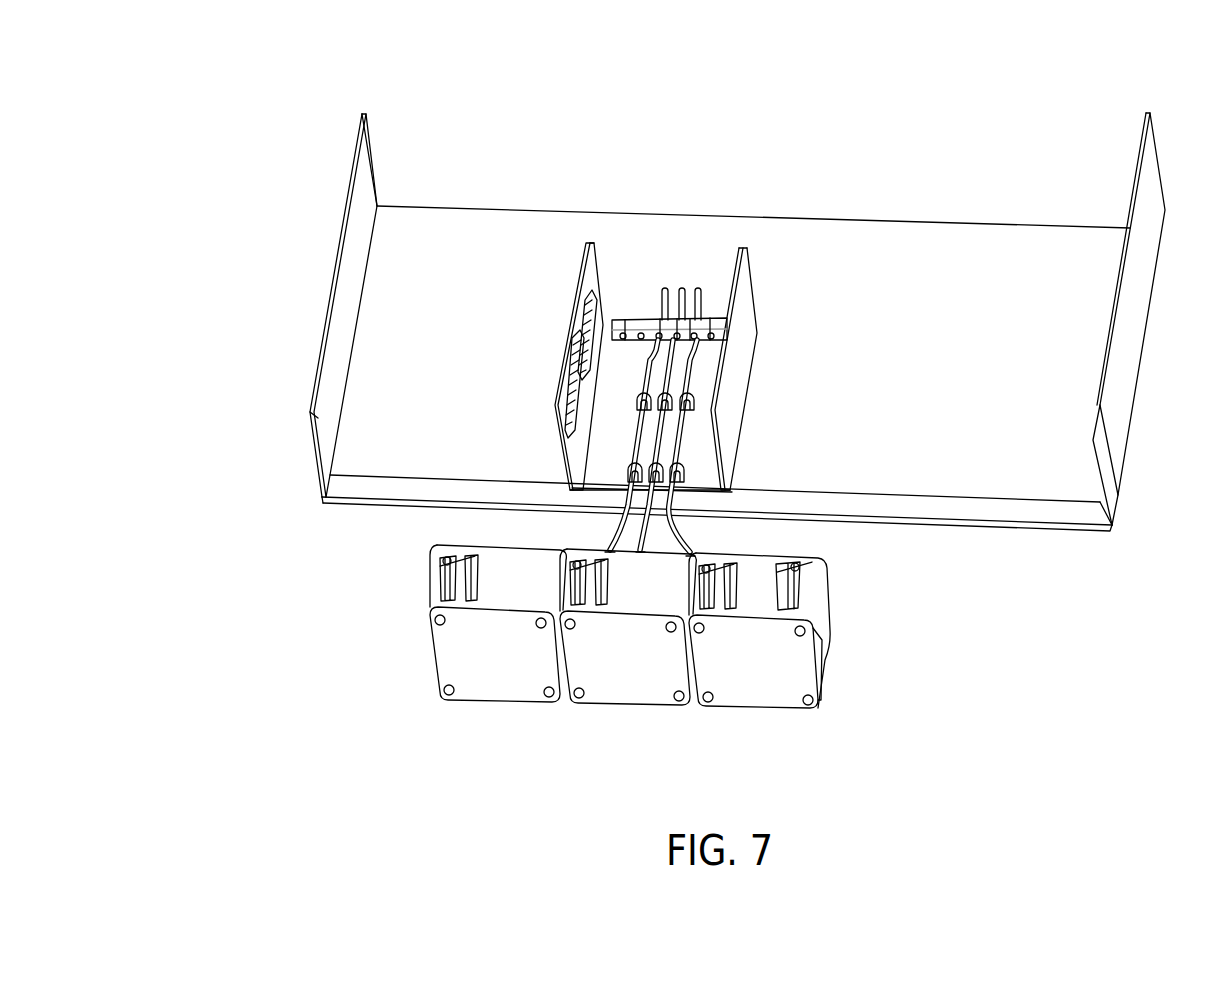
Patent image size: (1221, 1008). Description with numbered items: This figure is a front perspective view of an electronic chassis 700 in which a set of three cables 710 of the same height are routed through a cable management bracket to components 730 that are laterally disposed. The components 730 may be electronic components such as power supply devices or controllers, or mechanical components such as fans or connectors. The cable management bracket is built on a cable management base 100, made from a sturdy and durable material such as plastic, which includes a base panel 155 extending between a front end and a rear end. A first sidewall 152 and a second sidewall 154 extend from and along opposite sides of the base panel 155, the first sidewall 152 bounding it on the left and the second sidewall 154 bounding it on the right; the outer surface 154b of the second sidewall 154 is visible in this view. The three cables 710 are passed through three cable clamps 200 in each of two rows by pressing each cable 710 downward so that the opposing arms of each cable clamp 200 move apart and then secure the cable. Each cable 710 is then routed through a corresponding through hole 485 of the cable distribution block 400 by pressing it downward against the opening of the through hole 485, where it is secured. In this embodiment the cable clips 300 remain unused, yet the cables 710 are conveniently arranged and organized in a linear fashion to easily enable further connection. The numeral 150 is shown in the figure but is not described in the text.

The electronic chassis 700 is at (322, 96).
The cable management base 100 is at (762, 310).
The base plate 150 is at (743, 365).
The first sidewall 152 is at (588, 250).
The second sidewall 154 is at (750, 270).
The outer surface of the second sidewall 154b is at (733, 397).
The base panel 155 is at (592, 468).
The cable clamps 200 is at (692, 487).
The cable clips 300 is at (584, 300).
The cable distribution block 400 is at (623, 311).
The through hole 485 is at (643, 322).
The cables 710 is at (688, 522).
The components 730 is at (523, 685).